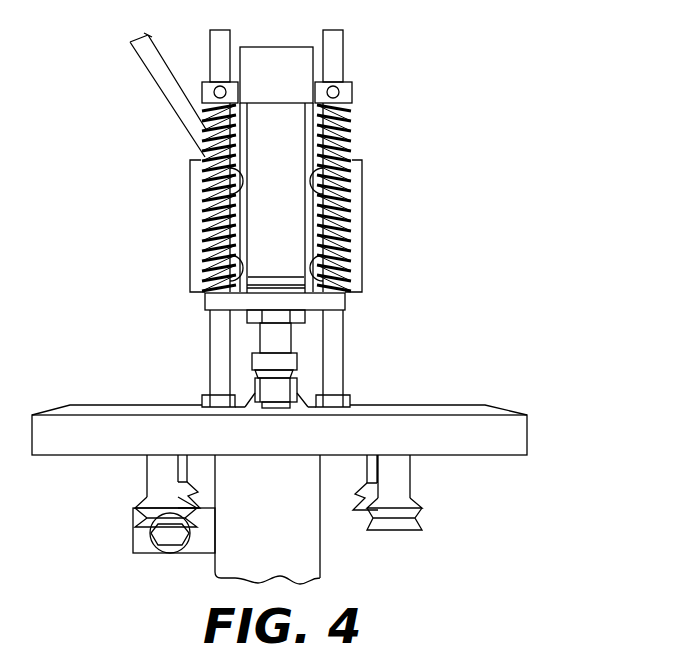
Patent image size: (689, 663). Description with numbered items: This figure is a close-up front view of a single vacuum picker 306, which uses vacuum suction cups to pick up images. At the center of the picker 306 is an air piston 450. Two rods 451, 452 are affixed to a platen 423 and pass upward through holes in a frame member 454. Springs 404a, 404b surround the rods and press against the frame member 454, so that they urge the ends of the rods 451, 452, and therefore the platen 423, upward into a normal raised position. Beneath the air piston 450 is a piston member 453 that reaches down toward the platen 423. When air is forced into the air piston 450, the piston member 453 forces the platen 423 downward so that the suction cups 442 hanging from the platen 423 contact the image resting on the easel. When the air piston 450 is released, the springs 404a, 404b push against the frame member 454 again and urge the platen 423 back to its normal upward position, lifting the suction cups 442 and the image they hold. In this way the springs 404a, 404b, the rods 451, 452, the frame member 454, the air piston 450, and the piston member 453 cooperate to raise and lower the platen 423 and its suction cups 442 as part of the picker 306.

The picker 306 is at (421, 72).
The spring 404a is at (203, 157).
The spring 404b is at (352, 138).
The air piston 450 is at (270, 229).
The frame member 454 is at (345, 302).
The rod 452 is at (210, 345).
The rod 451 is at (343, 342).
The piston member 453 is at (285, 340).
The platen 423 is at (527, 435).
The suction cups 442 is at (393, 527).